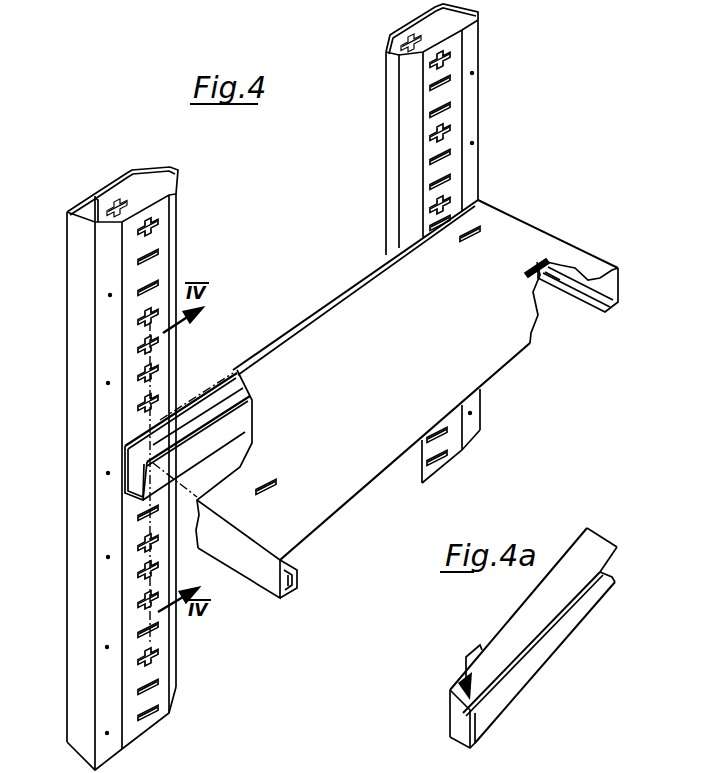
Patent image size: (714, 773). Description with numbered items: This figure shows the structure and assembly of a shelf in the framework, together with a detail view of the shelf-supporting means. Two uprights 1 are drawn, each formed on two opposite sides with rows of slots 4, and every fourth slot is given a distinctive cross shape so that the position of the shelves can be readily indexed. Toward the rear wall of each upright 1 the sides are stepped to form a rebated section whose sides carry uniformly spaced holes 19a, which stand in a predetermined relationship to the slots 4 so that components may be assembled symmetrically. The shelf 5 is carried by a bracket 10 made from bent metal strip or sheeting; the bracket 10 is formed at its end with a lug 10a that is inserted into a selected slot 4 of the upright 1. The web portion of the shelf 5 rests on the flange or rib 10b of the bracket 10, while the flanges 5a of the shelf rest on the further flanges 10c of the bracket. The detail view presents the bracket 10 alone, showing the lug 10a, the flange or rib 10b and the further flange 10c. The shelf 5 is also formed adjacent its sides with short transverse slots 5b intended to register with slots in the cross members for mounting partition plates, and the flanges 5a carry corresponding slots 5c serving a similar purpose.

In FIG. 4, the upright 1 is at (84, 412).
In FIG. 4, the holes 19a is at (69, 301).
In FIG. 4, the slots 4 is at (450, 107).
In FIG. 4, the shelf 5 is at (328, 342).
In FIG. 4, the flanges 5a is at (620, 283).
In FIG. 4, the short transverse slots 5b is at (546, 241).
In FIG. 4, the slots 5c is at (559, 303).
In FIG. 4, the bracket 10 is at (140, 424).
In FIG. 4A, the bracket 10 is at (541, 629).
In FIG. 4A, the lugs 10a is at (454, 667).
In FIG. 4, the flanges or ribs 10b is at (210, 410).
In FIG. 4A, the flanges or ribs 10b is at (593, 548).
In FIG. 4, the further flanges 10c is at (198, 439).
In FIG. 4A, the further flanges 10c is at (565, 657).